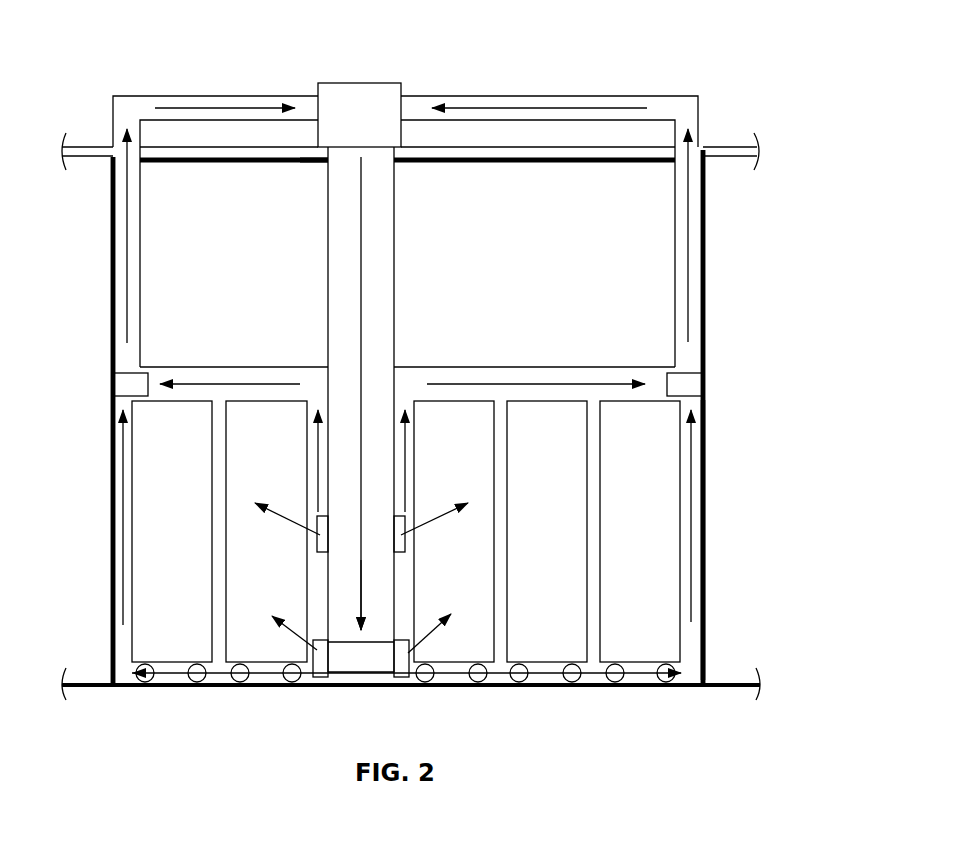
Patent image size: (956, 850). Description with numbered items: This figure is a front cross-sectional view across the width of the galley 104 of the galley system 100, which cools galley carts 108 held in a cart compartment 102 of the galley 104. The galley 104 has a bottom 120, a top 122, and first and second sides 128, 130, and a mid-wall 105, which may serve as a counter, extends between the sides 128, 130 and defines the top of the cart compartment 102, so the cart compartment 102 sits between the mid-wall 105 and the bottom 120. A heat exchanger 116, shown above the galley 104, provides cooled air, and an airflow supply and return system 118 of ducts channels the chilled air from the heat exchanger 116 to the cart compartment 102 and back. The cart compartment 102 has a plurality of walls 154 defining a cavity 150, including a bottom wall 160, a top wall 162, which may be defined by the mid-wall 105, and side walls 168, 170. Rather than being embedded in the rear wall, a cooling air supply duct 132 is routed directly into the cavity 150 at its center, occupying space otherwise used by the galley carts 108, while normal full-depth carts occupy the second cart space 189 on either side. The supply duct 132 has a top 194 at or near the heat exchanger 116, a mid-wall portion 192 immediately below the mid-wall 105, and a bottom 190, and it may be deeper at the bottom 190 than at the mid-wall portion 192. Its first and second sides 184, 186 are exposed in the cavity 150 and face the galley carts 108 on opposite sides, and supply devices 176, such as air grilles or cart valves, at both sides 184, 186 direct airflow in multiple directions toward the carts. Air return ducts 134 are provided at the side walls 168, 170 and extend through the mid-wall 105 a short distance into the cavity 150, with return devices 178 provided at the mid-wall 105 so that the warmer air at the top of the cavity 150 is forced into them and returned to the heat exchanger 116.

The galley system 100 is at (560, 20).
The cart compartment 102 is at (182, 688).
The galley 104 is at (744, 250).
The mid-wall 105 is at (578, 367).
The galley cart 108 is at (147, 560).
The heat exchanger 116 is at (374, 83).
The airflow supply and return system 118 is at (544, 88).
The bottom 120 is at (513, 686).
The top 122 is at (581, 146).
The first side 128 is at (707, 212).
The second side 130 is at (111, 273).
The cooling air supply duct 132 is at (393, 237).
The air return duct 134 is at (136, 233).
The cavity 150 is at (216, 395).
The walls 154 is at (706, 455).
The bottom wall 160 is at (575, 686).
The top wall 162 is at (518, 367).
The side wall 168 is at (706, 492).
The side wall 170 is at (111, 503).
The supply device 176 is at (377, 612).
The return device 178 is at (125, 385).
The first side 184 is at (395, 603).
The second side 186 is at (328, 597).
The second cart space 189 is at (225, 690).
The bottom 190 is at (335, 678).
The mid-wall portion 192 is at (322, 364).
The top 194 is at (324, 168).